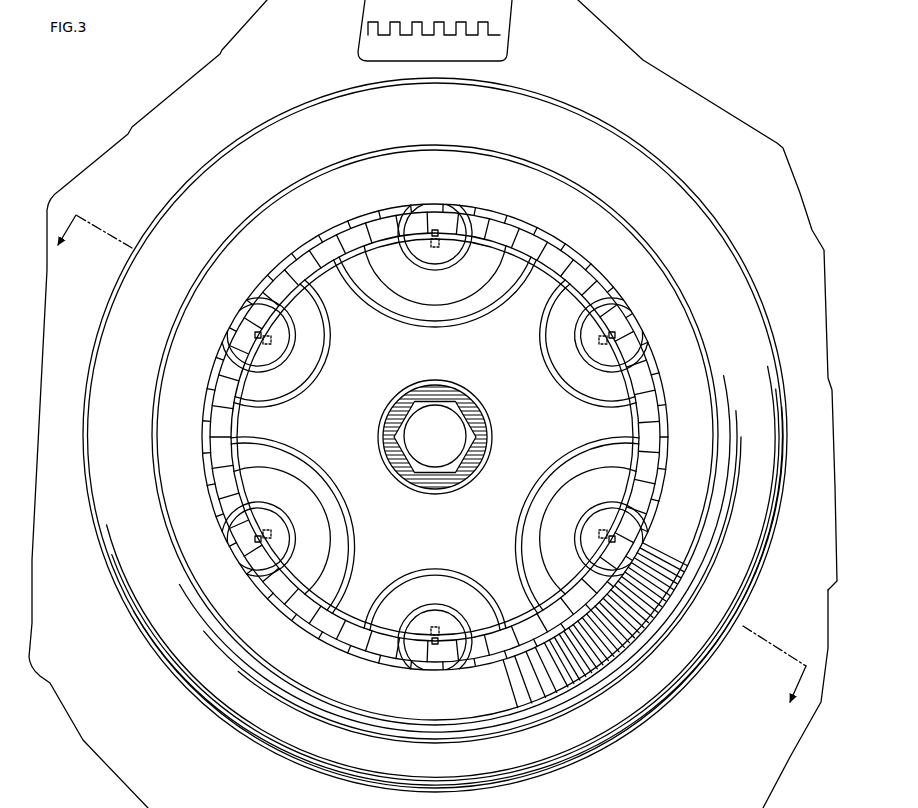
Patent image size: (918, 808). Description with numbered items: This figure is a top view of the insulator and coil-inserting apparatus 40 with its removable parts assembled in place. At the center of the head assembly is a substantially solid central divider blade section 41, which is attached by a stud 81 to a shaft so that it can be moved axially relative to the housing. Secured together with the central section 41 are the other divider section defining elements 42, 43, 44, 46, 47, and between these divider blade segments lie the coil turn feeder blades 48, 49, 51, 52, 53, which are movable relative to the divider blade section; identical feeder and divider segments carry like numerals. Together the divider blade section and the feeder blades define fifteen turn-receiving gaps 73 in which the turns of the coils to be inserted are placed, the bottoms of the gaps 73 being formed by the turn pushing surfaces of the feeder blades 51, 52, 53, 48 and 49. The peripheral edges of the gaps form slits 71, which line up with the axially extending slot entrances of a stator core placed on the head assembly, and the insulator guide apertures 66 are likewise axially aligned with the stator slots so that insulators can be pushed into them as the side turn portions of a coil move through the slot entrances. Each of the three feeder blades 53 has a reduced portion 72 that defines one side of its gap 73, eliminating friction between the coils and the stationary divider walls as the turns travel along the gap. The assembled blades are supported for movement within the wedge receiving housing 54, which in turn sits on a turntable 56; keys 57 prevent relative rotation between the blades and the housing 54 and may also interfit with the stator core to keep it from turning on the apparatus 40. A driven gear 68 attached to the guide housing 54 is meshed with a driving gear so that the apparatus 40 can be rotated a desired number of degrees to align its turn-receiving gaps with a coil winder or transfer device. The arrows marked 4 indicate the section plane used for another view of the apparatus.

The section line 4- 4 is at (432, 459).
The apparatus 40 is at (758, 179).
The central divider blade section 41 is at (487, 371).
The divider section defining element 42 is at (365, 276).
The divider section defining element 43 is at (440, 293).
The divider section defining element 44 is at (442, 253).
The divider section defining element 46 is at (570, 334).
The divider section defining element 47 is at (610, 361).
The coil turn feeder blade 48 is at (612, 372).
The coil turn feeder blade 49 is at (562, 394).
The coil turn feeder blade 51 is at (453, 253).
The coil turn feeder blade 52 is at (484, 279).
The coil turn feeder blade 53 is at (386, 312).
The wedge receiving housing 54 is at (650, 727).
The turntable 56 is at (783, 757).
The key 57 is at (620, 338).
The insulator guide aperture 66 is at (625, 578).
The driven gear 68 is at (493, 50).
The slit 71 is at (467, 215).
The reduced portion 72 is at (498, 314).
The turn-receiving gap 73 is at (449, 322).
The stud 81 is at (441, 435).